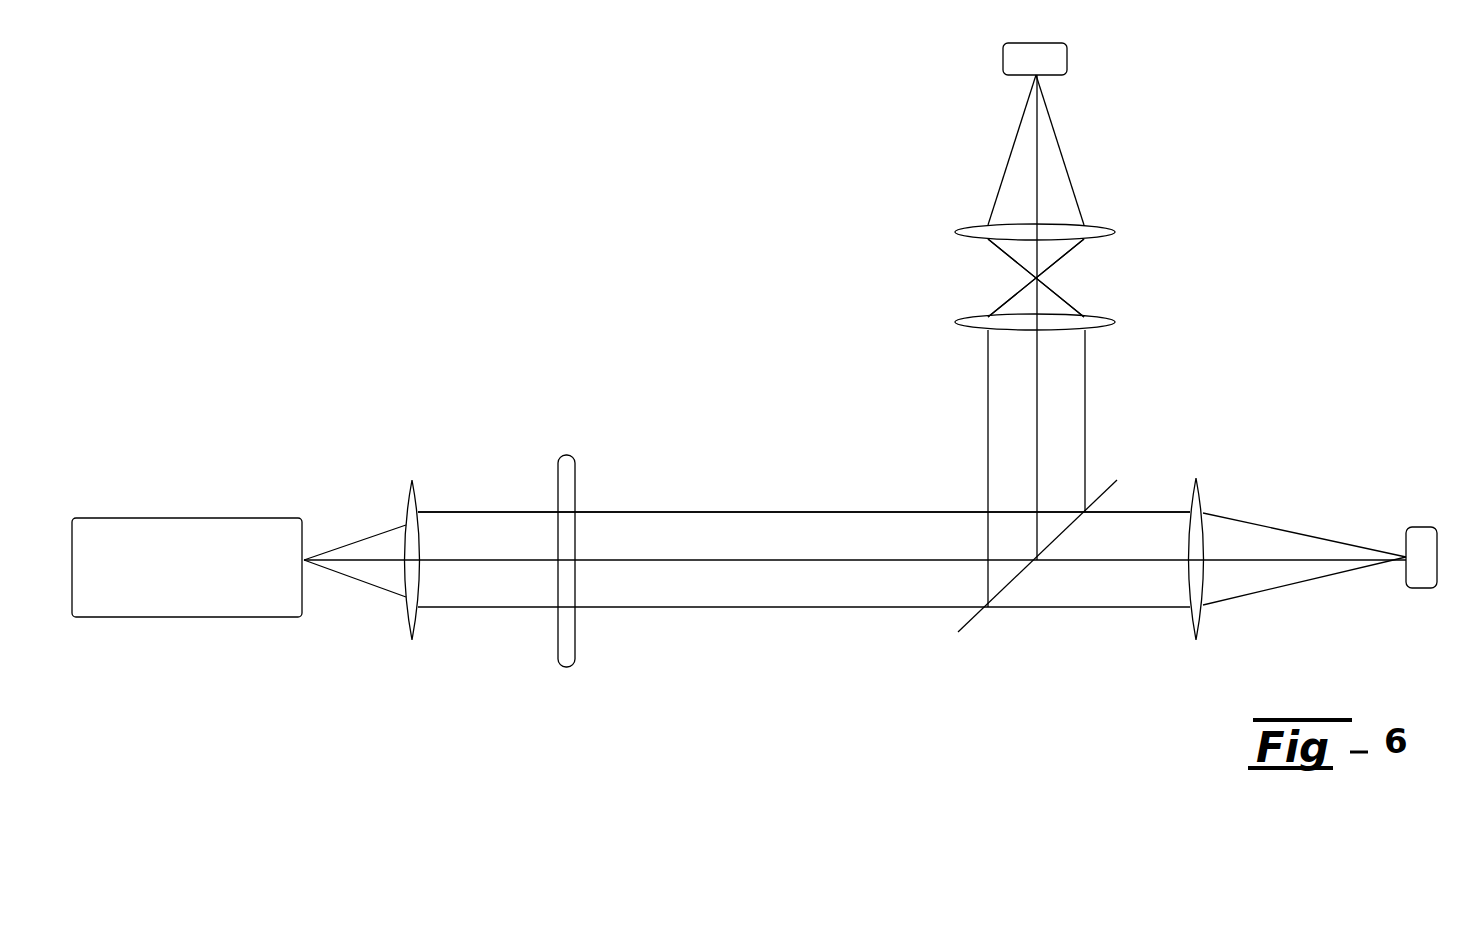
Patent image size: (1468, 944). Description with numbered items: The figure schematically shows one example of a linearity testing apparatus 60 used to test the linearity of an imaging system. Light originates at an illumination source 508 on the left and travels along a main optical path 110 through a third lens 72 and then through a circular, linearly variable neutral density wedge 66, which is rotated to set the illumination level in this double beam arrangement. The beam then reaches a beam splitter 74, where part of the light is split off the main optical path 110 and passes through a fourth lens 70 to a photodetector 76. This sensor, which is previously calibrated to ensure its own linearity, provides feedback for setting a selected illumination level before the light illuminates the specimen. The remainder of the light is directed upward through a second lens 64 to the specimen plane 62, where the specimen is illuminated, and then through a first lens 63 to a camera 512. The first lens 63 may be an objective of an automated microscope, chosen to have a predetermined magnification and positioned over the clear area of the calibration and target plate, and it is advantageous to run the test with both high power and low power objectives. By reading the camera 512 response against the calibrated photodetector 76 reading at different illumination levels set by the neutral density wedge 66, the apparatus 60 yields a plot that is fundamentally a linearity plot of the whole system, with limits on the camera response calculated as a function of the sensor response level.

The illumination source 508 is at (230, 517).
The third lens 72 is at (407, 485).
The neutral density wedge 66 is at (567, 453).
The main optical path 110 is at (810, 512).
The beam splitter 74 is at (960, 630).
The fourth lens 70 is at (1195, 463).
The photodetector 76 is at (1417, 527).
The second lens 64 is at (956, 322).
The first lens 63 is at (1115, 232).
The specimen plane 62 is at (1071, 273).
The camera 512 is at (1068, 57).
The linearity testing apparatus 60 is at (1347, 268).